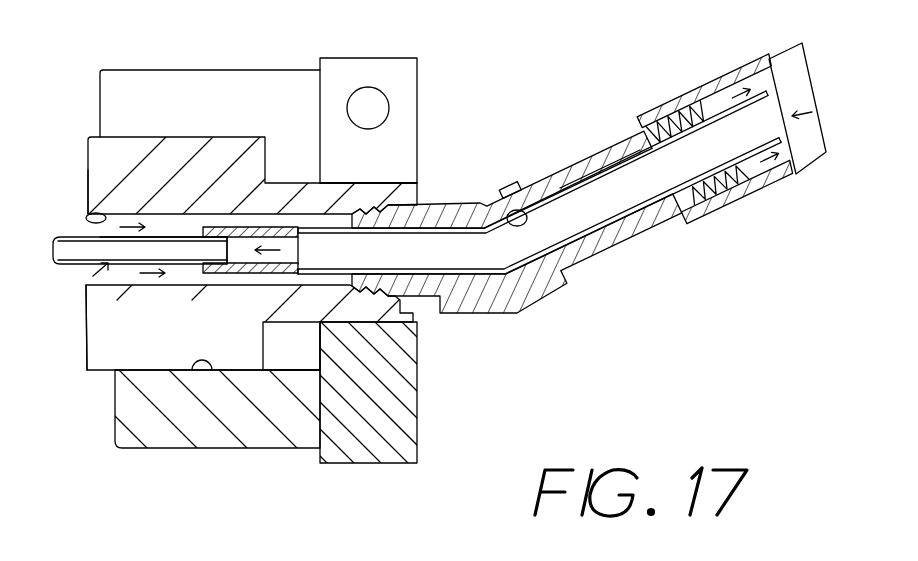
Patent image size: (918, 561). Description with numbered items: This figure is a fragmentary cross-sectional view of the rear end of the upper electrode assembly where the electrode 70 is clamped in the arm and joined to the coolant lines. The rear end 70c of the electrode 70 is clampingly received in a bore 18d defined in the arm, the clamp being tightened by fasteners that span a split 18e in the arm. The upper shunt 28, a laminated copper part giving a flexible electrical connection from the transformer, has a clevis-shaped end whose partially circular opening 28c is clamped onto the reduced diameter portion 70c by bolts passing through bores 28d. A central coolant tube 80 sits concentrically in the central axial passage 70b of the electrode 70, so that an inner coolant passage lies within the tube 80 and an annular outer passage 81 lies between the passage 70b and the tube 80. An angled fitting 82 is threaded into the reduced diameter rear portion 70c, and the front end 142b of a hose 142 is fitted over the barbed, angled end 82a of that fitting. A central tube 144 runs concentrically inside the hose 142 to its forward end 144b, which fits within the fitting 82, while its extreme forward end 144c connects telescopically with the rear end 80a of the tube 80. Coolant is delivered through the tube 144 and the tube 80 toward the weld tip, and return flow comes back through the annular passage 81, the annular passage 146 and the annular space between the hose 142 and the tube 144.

The electrode 70 is at (90, 136).
The central axial passage 70b is at (84, 216).
The rear end of electrode 70c is at (385, 182).
The split 18e is at (294, 72).
The bore 18d is at (205, 373).
The upper shunt 28 is at (424, 413).
The partially circular opening 28c is at (393, 313).
The bores 28d is at (380, 101).
The central coolant tube 80 is at (56, 258).
The rear end of tube 80a is at (175, 236).
The annular outer passage 81 is at (85, 300).
The angled fitting 82 is at (555, 309).
The barbed angled end 82a is at (604, 150).
The hose 142 is at (802, 178).
The front end of hose 142b is at (714, 84).
The central tube 144 is at (557, 193).
The forward end of tube 144b is at (650, 232).
The extreme forward end of tube 144c is at (232, 228).
The annular passage 146 is at (503, 192).